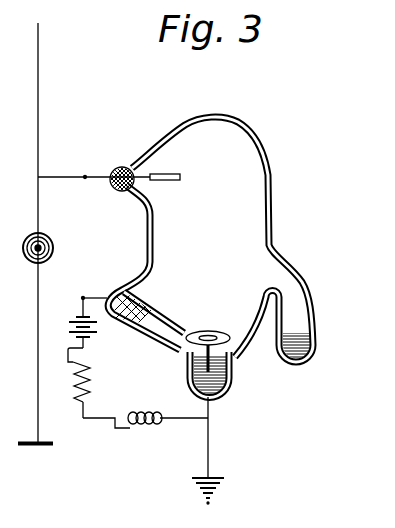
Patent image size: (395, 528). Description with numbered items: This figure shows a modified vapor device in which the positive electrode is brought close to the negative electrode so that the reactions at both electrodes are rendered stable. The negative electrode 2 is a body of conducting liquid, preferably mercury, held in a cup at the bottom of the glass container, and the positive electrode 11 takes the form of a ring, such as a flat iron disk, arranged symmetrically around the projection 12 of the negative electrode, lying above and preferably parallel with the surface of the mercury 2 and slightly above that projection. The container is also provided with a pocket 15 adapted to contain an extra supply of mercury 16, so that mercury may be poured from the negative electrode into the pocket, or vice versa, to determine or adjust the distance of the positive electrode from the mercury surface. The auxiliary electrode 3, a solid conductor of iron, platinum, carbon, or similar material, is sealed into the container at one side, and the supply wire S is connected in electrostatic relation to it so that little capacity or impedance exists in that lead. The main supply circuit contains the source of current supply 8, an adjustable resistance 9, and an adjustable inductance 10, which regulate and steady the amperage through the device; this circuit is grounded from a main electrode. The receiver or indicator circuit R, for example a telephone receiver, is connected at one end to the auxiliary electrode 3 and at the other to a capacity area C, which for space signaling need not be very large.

The negative electrode 2 is at (231, 376).
The auxiliary electrode 3 is at (170, 174).
The source of current supply 8 is at (80, 323).
The adjustable resistance 9 is at (74, 383).
The adjustable inductance 10 is at (137, 411).
The positive electrode 11 is at (211, 334).
The projection of the negative electrode 12 is at (239, 352).
The pocket 15 is at (316, 319).
The extra supply of mercury 16 is at (295, 366).
The supply wire S is at (47, 232).
The receiver or indicator circuit R is at (46, 248).
The capacity area C is at (35, 458).